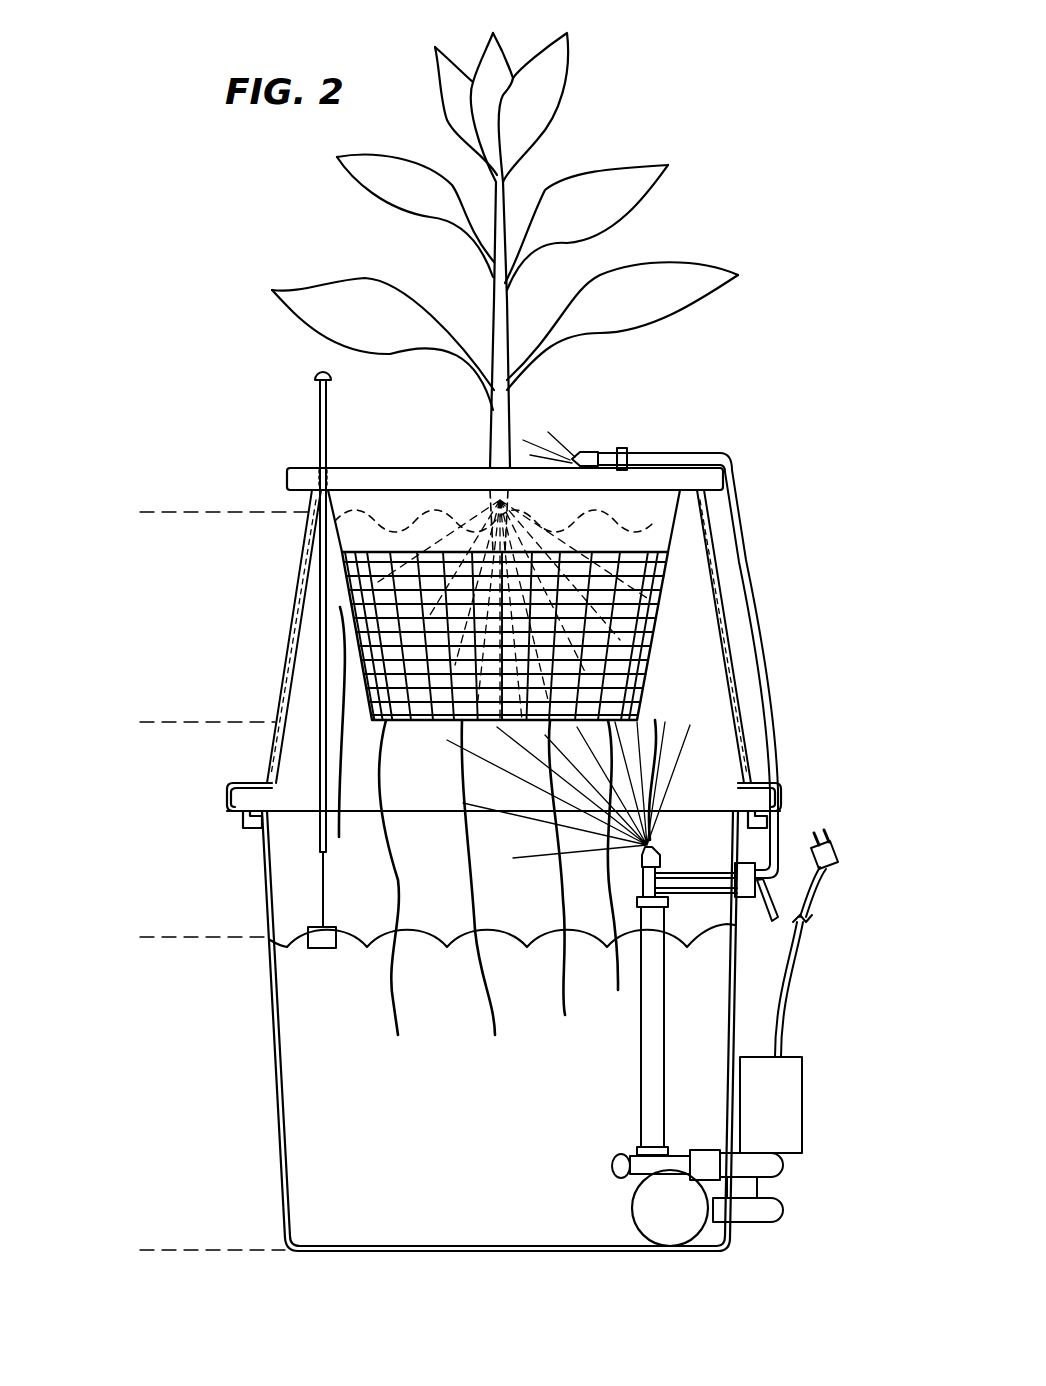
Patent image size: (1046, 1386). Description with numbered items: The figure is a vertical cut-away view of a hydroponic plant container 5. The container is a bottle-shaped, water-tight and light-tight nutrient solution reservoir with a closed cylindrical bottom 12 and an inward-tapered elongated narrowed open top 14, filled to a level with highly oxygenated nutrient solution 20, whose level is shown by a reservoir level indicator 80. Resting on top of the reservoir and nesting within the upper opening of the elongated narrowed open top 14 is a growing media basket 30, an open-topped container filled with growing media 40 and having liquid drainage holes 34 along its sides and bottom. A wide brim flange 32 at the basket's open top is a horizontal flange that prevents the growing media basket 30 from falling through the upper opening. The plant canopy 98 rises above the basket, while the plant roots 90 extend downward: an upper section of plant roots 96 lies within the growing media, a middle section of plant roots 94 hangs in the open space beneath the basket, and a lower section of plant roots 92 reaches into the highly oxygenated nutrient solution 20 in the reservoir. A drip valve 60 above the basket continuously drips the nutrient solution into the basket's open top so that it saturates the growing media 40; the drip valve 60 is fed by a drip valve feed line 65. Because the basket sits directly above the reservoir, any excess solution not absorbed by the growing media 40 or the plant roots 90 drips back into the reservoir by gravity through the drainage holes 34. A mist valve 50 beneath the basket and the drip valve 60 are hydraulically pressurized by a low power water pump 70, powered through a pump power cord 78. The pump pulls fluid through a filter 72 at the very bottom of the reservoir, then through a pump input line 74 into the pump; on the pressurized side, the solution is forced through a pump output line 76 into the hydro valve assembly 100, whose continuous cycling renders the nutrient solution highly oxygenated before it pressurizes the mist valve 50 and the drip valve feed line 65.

The hydroponic plant container 5 is at (106, 411).
The plant canopy 98 is at (624, 166).
The wide brim flange 32 is at (307, 468).
The drip valve 60 is at (622, 448).
The drip valve feed line 65 is at (778, 702).
The elongated narrowed open top 14 is at (300, 575).
The growing media 40 is at (653, 532).
The growing media basket 30 is at (655, 612).
The drainage holes 34 is at (650, 583).
The plant roots 90 is at (655, 727).
The reservoir level indicator 80 is at (318, 625).
The cylindrical bottom 12 is at (273, 1093).
The highly oxygenated nutrient solution 20 is at (315, 1005).
The mist valve 50 is at (657, 848).
The hydro valve assembly 100 is at (665, 1027).
The low power water pump 70 is at (802, 1098).
The pump power cord 78 is at (818, 885).
The pump output line 76 is at (770, 1165).
The pump input line 74 is at (757, 1215).
The filter for pump input 72 is at (663, 1225).
The upper section of plant roots 96 is at (140, 722).
The middle section of plant roots 94 is at (140, 722).
The lower section of plant roots 92 is at (140, 1250).